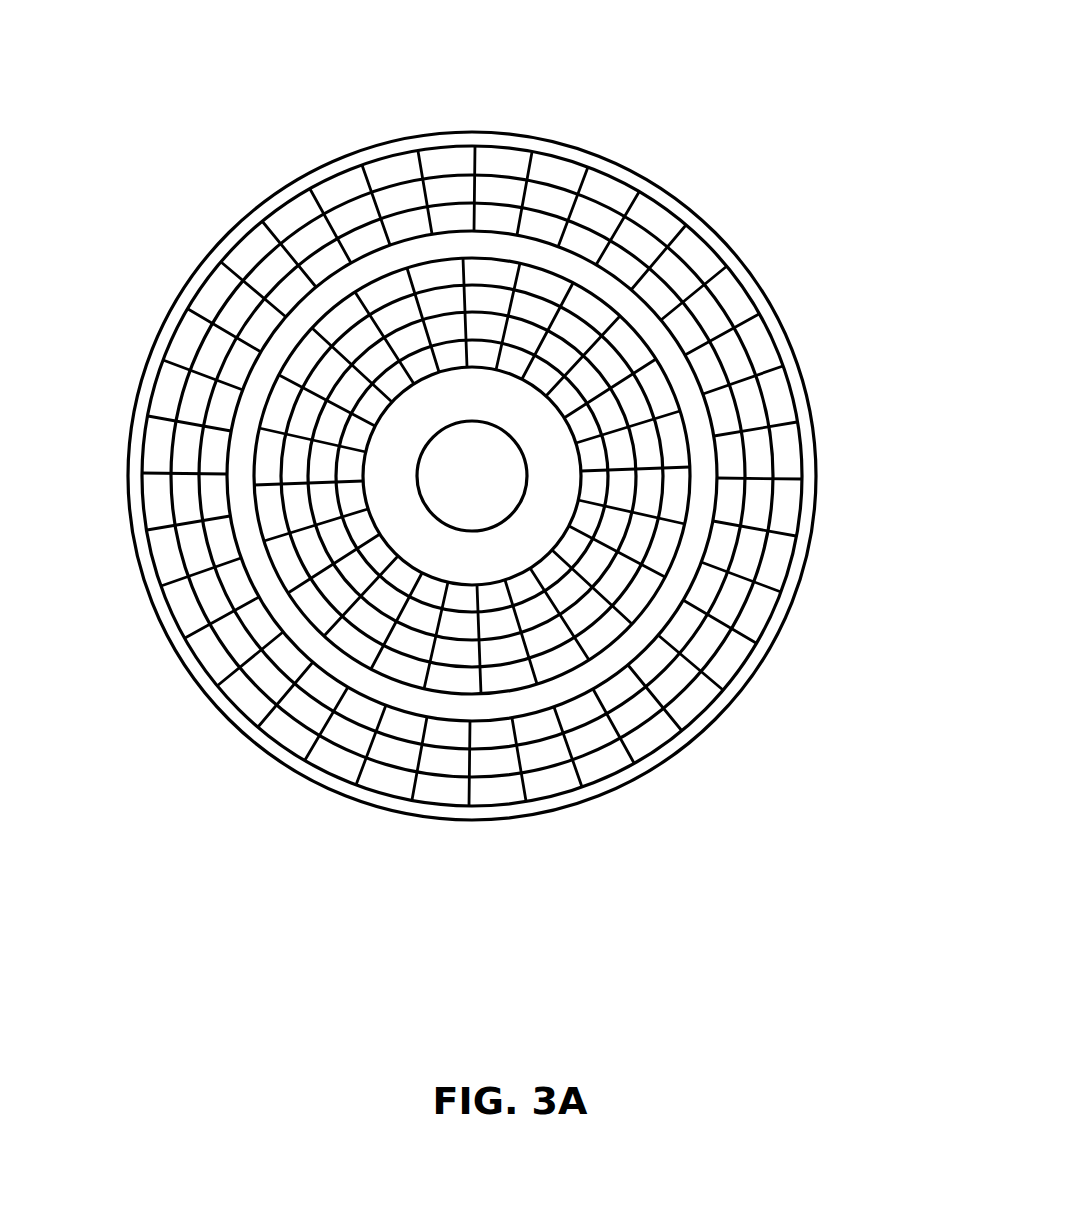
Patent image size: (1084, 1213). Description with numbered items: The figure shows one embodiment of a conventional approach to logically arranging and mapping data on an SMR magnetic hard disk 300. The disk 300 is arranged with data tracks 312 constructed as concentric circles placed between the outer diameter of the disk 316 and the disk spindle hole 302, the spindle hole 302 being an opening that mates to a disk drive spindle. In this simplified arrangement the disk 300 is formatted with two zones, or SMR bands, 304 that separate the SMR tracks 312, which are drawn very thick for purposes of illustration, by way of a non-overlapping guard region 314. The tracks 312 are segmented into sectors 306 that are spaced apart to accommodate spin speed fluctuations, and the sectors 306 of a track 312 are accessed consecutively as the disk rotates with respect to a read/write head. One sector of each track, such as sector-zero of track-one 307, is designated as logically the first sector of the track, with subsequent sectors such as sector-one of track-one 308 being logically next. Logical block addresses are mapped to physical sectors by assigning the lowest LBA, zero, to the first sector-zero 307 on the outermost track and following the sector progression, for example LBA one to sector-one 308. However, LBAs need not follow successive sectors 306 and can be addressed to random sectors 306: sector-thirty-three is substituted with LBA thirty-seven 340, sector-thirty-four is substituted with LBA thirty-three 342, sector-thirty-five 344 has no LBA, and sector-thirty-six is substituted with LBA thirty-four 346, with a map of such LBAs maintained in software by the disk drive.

The SMR magnetic hard disk 300 is at (452, 40).
The disk spindle hole 302 is at (417, 480).
The zones (SMR bands) 304 is at (490, 816).
The sectors 306 is at (266, 726).
The sector-0 of track-1 307 is at (434, 160).
The sector-1 of track-1 308 is at (512, 158).
The data tracks (SMR tracks) 312 is at (778, 553).
The non-overlapping guard region 314 is at (687, 570).
The outer diameter of the disk 316 is at (680, 197).
The LBA 37 substituted into sector-33 340 is at (715, 320).
The LBA 33 substituted into sector-34 342 is at (745, 362).
The sector-35 with no LBA 344 is at (777, 413).
The LBA 34 substituted into sector-36 346 is at (763, 468).